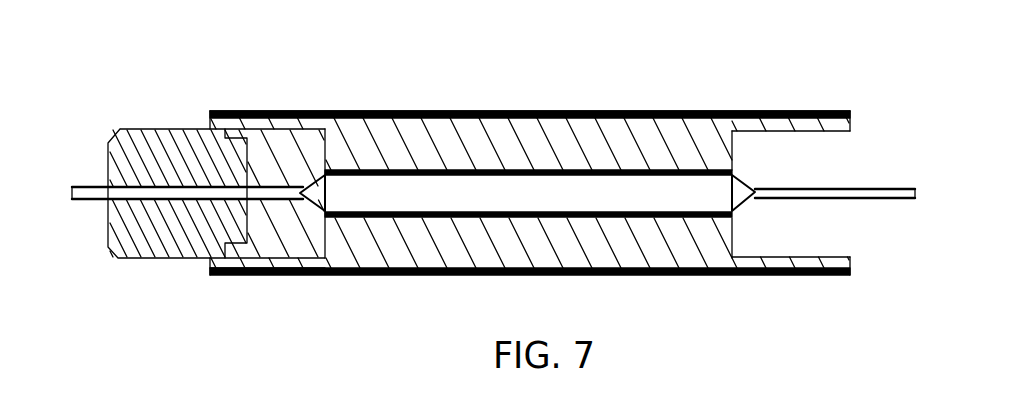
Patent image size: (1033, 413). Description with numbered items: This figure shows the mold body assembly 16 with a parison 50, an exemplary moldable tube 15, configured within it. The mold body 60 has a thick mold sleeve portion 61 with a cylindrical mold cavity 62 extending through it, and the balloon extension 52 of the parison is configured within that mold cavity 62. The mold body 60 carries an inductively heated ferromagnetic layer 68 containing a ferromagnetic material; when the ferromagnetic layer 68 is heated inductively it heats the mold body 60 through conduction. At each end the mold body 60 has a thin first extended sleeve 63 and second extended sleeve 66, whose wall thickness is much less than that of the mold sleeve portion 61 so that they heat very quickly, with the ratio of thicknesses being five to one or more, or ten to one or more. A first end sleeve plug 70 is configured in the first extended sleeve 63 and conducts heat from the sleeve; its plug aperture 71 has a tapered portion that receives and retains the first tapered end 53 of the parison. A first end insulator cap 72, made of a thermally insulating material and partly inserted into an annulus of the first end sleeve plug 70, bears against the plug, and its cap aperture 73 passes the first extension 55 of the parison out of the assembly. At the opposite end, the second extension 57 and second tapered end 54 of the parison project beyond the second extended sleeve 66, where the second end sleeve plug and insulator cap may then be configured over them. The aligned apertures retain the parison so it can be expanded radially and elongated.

The mold body assembly 16 is at (730, 95).
The moldable tube 15 is at (382, 192).
The parison 50 is at (430, 193).
The balloon extension 52 is at (473, 193).
The first tapered end 53 is at (327, 216).
The second tapered end 54 is at (734, 218).
The first extension 55 is at (95, 200).
The second extension 57 is at (890, 200).
The mold body 60 is at (527, 150).
The mold sleeve portion 61 is at (612, 142).
The mold cavity 62 is at (478, 188).
The first extended sleeve 63 is at (239, 276).
The second extended sleeve 66 is at (790, 276).
The ferromagnetic layer 68 is at (418, 111).
The first end sleeve plug 70 is at (270, 178).
The plug aperture 71 is at (323, 165).
The first end insulator cap 72 is at (118, 130).
The cap aperture 73 is at (168, 168).